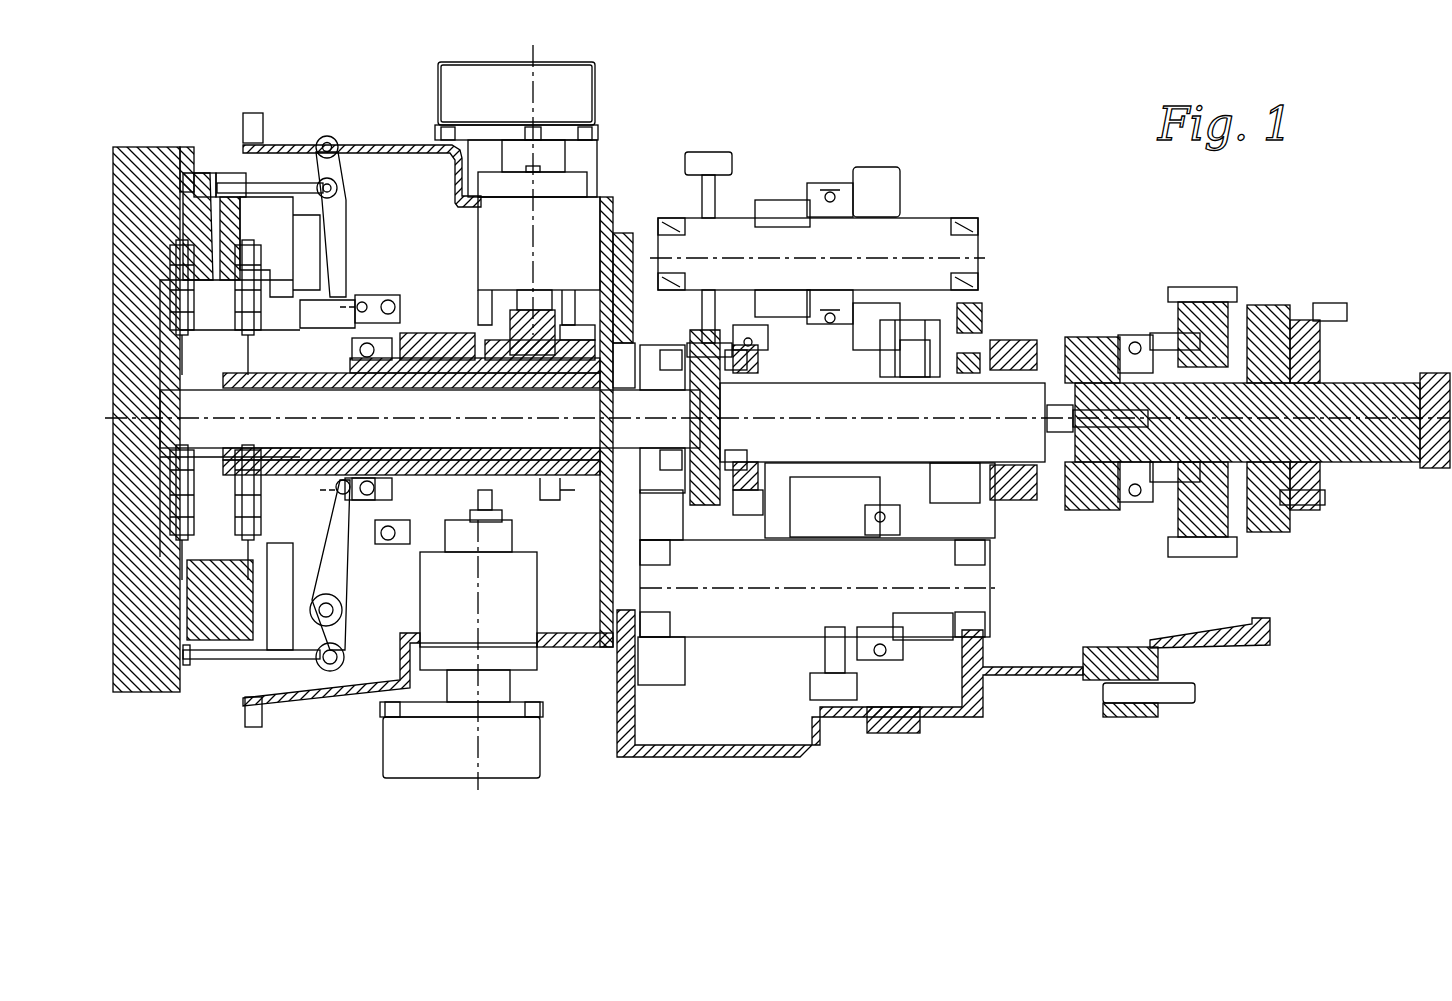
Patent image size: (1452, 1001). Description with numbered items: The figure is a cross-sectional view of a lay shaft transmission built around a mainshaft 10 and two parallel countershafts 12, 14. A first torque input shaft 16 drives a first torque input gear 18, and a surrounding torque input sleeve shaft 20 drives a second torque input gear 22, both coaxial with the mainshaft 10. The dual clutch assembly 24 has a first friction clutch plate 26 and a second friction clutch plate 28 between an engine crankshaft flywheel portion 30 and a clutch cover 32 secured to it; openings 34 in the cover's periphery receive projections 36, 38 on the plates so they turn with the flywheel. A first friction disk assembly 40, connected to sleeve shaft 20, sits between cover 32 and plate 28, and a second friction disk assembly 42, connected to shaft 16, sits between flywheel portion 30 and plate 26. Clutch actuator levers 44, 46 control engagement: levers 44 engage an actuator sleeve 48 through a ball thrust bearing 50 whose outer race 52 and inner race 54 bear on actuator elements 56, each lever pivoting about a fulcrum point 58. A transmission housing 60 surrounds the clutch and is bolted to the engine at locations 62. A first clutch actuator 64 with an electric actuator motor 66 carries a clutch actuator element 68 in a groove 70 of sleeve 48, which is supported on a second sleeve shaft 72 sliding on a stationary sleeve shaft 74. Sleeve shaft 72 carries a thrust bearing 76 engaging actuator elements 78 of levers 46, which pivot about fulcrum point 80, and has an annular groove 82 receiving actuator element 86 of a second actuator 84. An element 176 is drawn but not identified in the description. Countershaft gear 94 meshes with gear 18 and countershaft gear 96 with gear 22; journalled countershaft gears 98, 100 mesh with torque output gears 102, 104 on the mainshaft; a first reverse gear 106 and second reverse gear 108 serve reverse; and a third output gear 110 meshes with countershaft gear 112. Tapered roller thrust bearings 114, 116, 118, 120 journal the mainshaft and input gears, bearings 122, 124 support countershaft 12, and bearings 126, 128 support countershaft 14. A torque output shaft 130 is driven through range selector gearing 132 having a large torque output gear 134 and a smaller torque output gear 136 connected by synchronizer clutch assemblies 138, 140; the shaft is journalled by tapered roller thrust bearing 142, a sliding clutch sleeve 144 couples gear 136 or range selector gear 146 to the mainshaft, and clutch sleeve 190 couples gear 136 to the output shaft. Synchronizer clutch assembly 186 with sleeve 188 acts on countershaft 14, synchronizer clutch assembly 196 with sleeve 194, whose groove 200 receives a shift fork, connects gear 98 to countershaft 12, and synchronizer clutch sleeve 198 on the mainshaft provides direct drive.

The mainshaft 10 is at (852, 409).
The countershaft 12 is at (836, 251).
The countershaft 14 is at (772, 571).
The first torque input shaft 16 is at (292, 400).
The first torque input gear 18 is at (693, 372).
The torque input sleeve shaft 20 is at (317, 388).
The second torque input gear 22 is at (645, 360).
The dual clutch assembly 24 is at (208, 160).
The first friction clutch plate 26 is at (178, 187).
The second friction clutch plate 28 is at (235, 238).
The engine crankshaft flywheel portion 30 is at (140, 195).
The clutch cover 32 is at (277, 273).
The openings 34 is at (222, 180).
The projection 36 is at (197, 182).
The projection 38 is at (235, 175).
The first friction disk assembly 40 is at (262, 313).
The second friction disk assembly 42 is at (178, 300).
The clutch actuator lever 44 is at (333, 212).
The clutch actuator lever 46 is at (335, 563).
The actuator sleeve 48 is at (450, 335).
The ball thrust bearing 50 is at (392, 300).
The outer race 52 is at (364, 300).
The inner race 54 is at (400, 318).
The actuator elements 56 is at (352, 316).
The fulcrum point 58 is at (327, 136).
The transmission housing 60 is at (385, 150).
The bolts 62 is at (245, 715).
The first clutch actuator 64 is at (510, 615).
The electric actuator motor 66 is at (520, 580).
The clutch actuator element 68 is at (510, 493).
The groove 70 is at (478, 348).
The second sleeve shaft 72 is at (481, 357).
The stationary sleeve shaft 74 is at (558, 340).
The thrust bearing 76 is at (345, 500).
The actuator elements 78 is at (336, 488).
The fulcrum point 80 is at (333, 610).
The annular groove 82 is at (555, 490).
The second actuator 84 is at (527, 213).
The actuator element 86 is at (520, 388).
The first countershaft gear 94 is at (700, 160).
The countershaft gear 96 is at (690, 660).
The countershaft gear 98 is at (875, 180).
The countershaft gear 100 is at (930, 640).
The torque output gear 102 is at (947, 317).
The torque output gear 104 is at (933, 357).
The first reverse gear 106 is at (775, 200).
The second reverse gear 108 is at (785, 500).
The third output gear 110 is at (838, 540).
The countershaft gear 112 is at (830, 470).
The tapered roller thrust bearing 114 is at (963, 357).
The tapered roller thrust bearing 116 is at (745, 375).
The tapered roller thrust bearing 118 is at (660, 380).
The tapered roller thrust bearing 120 is at (577, 357).
The tapered roller thrust bearing 122 is at (960, 225).
The tapered roller thrust bearing 124 is at (672, 222).
The tapered roller thrust bearing 126 is at (985, 575).
The tapered roller thrust bearing 128 is at (660, 605).
The torque output shaft 130 is at (1393, 400).
The range selector gearing 132 is at (1290, 312).
The large diameter torque output gear 134 is at (1220, 287).
The smaller diameter torque output gear 136 is at (1085, 510).
The first synchronizer clutch assembly 138 is at (1150, 335).
The second synchronizer clutch assembly 140 is at (1140, 502).
The tapered roller thrust bearing 142 is at (1310, 500).
The sliding clutch sleeve 144 is at (1060, 440).
The range selector gear 146 is at (1010, 495).
The rod 176 is at (300, 660).
The synchronizer clutch assembly 186 is at (880, 665).
The synchronizer clutch sleeve 188 is at (895, 650).
The clutch sleeve 190 is at (1165, 333).
The synchronizer clutch sleeve 194 is at (835, 183).
The synchronizer clutch assembly 196 is at (820, 180).
The synchronizer clutch sleeve 198 is at (740, 495).
The groove 200 is at (745, 325).